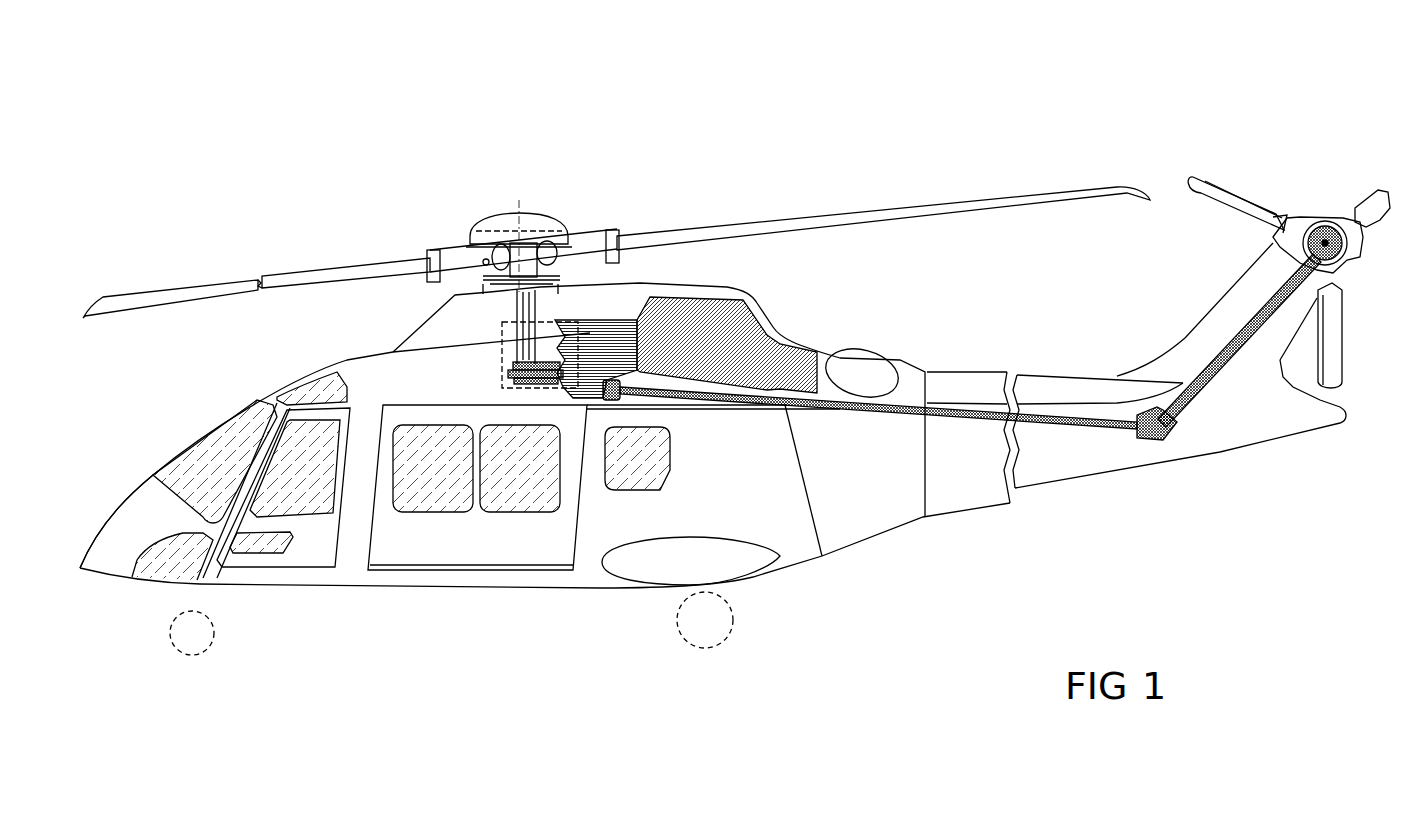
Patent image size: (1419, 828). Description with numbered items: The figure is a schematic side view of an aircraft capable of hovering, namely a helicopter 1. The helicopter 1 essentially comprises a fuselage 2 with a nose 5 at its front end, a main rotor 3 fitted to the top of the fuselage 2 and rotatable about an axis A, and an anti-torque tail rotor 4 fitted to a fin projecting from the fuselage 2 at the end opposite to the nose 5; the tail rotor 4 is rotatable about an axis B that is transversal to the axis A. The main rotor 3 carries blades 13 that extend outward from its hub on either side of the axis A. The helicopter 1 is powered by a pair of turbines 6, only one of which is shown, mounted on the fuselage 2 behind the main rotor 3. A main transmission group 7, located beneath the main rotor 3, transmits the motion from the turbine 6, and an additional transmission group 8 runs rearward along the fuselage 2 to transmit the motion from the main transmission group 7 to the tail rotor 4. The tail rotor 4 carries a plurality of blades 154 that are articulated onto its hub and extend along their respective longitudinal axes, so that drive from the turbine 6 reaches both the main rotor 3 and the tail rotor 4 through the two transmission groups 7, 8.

The helicopter 1 is at (446, 209).
The fuselage 2 is at (590, 552).
The main rotor 3 is at (635, 197).
The anti-torque tail rotor 4 is at (1370, 273).
The nose 5 is at (147, 520).
The turbine 6 is at (707, 350).
The main transmission group 7 is at (501, 372).
The additional transmission group 8 is at (1215, 376).
The main rotor blades 13 is at (292, 277).
The blades 154 is at (1246, 198).
The axis A is at (518, 205).
The axis B is at (1325, 237).